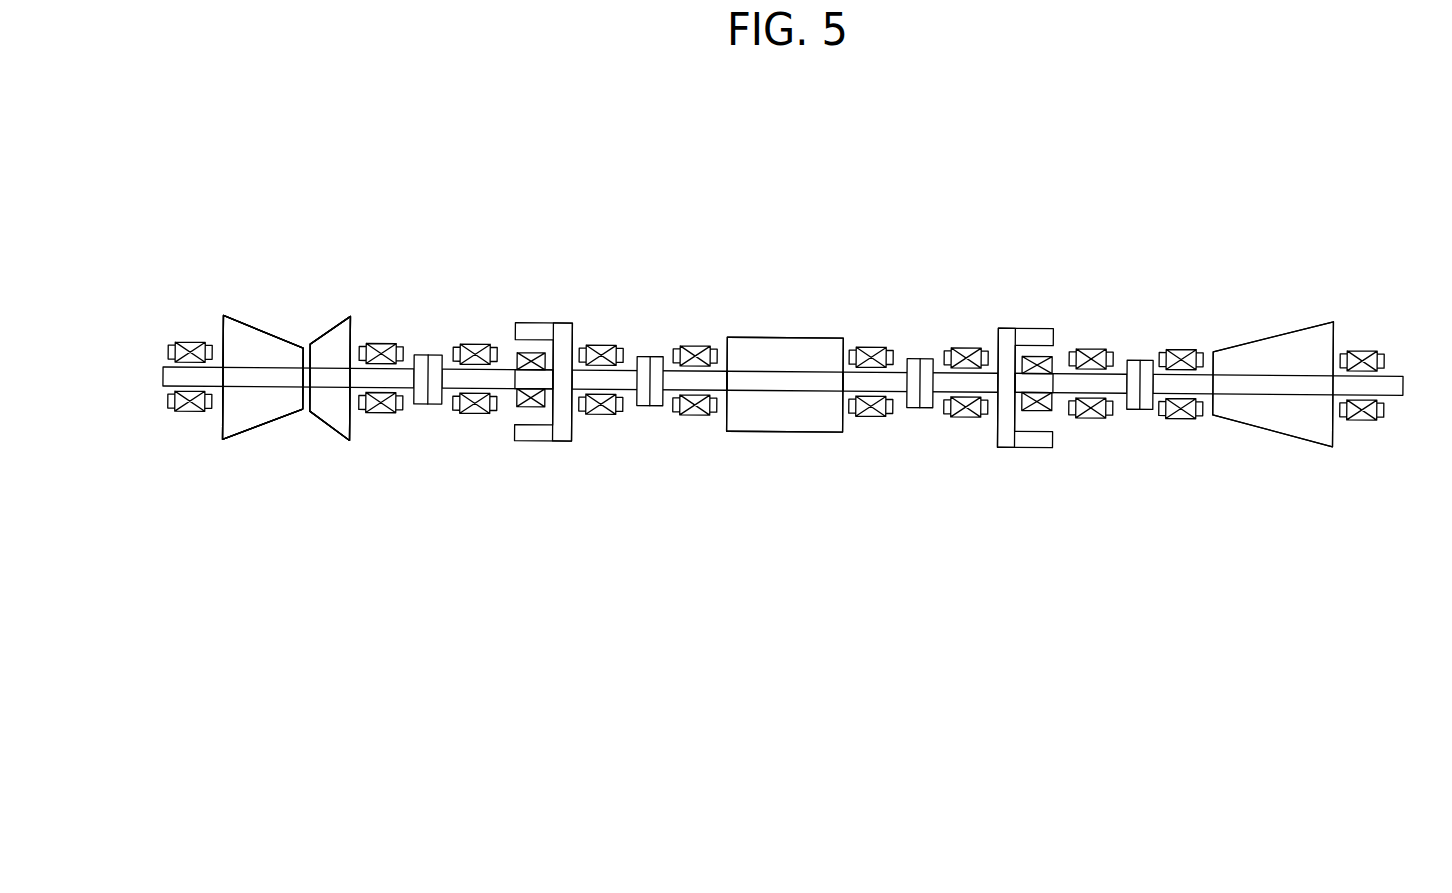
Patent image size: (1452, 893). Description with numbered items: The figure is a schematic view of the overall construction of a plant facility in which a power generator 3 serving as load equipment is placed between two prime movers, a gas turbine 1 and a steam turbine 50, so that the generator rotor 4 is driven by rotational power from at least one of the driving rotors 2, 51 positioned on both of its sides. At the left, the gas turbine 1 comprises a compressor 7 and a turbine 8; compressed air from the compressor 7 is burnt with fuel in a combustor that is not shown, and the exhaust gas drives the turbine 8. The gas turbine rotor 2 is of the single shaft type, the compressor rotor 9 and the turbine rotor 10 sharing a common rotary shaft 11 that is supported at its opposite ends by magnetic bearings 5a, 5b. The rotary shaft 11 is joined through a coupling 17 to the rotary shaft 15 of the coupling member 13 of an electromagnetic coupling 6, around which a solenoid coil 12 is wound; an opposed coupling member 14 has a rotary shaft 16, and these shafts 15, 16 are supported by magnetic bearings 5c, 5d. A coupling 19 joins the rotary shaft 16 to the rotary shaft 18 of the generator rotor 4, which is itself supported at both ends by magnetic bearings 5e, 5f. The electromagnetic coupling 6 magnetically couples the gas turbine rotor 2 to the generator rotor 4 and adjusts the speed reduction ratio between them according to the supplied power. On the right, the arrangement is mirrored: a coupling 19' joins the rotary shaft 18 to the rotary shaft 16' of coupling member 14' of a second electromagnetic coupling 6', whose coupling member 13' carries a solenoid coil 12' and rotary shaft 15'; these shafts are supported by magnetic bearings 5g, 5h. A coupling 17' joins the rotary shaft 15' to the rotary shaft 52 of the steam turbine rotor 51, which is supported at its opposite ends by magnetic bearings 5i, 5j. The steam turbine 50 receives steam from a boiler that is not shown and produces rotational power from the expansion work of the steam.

The gas turbine 1 is at (277, 230).
The gas turbine rotor 2 is at (338, 270).
The power generator 3 is at (790, 298).
The generator rotor 4 is at (838, 338).
The magnetic bearing 5a is at (190, 413).
The magnetic bearing 5b is at (381, 413).
The magnetic bearing 5c is at (476, 413).
The magnetic bearing 5d is at (600, 416).
The magnetic bearing 5e is at (695, 416).
The magnetic bearing 5f is at (871, 418).
The magnetic bearing 5g is at (966, 418).
The magnetic bearing 5h is at (1090, 420).
The magnetic bearing 5i is at (1181, 420).
The magnetic bearing 5j is at (1363, 421).
The electromagnetic coupling 6 is at (561, 316).
The electromagnetic coupling 6' is at (1013, 329).
The compressor 7 is at (226, 314).
The turbine 8 is at (352, 314).
The compressor rotor 9 is at (278, 336).
The turbine rotor 10 is at (326, 332).
The rotary shaft 11 is at (163, 365).
The solenoid coil 12 is at (510, 352).
The solenoid coil 12' is at (1060, 355).
The coupling member 13 is at (536, 315).
The coupling member 13' is at (1036, 324).
The coupling member 14 is at (581, 341).
The coupling member 14' is at (993, 351).
The rotary shaft 15 is at (492, 423).
The rotary shaft 15' is at (1086, 425).
The rotary shaft 16 is at (649, 423).
The rotary shaft 16' is at (920, 424).
The coupling 17 is at (432, 349).
The coupling 17' is at (1147, 353).
The rotary shaft 18 is at (789, 392).
The coupling 19 is at (652, 350).
The coupling 19' is at (926, 351).
The steam turbine 50 is at (1326, 298).
The steam turbine rotor 51 is at (1267, 338).
The rotary shaft 52 is at (1398, 374).